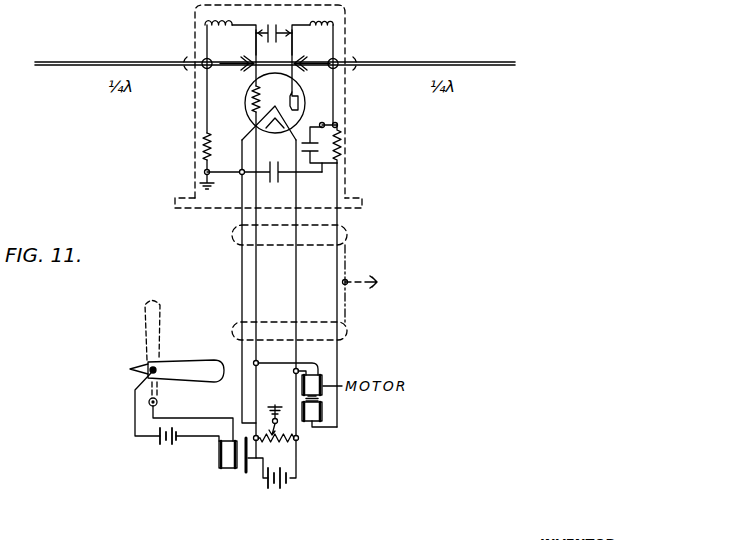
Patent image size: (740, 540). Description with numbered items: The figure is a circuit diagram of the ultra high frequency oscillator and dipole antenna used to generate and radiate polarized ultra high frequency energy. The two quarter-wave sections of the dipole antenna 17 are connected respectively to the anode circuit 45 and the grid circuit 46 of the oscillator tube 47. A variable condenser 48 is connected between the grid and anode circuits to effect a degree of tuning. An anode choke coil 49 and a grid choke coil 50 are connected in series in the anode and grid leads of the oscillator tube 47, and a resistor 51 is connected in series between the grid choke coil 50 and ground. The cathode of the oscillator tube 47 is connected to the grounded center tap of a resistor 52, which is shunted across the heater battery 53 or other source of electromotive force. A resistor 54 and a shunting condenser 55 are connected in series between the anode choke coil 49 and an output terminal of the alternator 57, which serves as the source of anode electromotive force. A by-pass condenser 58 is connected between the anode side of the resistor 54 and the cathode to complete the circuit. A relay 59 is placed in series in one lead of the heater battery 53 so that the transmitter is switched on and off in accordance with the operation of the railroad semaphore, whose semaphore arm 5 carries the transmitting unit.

The semaphore arm 5 is at (199, 372).
The dipole antenna 17 is at (82, 69).
The anode circuit 45 is at (301, 47).
The grid circuit 46 is at (247, 47).
The oscillator tube 47 is at (300, 104).
The variable condenser 48 is at (264, 31).
The anode choke coil 49 is at (334, 23).
The grid choke coil 50 is at (204, 27).
The resistor 51 is at (201, 149).
The resistor 52 is at (268, 424).
The heater battery 53 is at (263, 486).
The resistor 54 is at (345, 150).
The shunting condenser 55 is at (314, 138).
The alternator 57 is at (321, 409).
The by-pass condenser 58 is at (284, 178).
The relay 59 is at (222, 455).